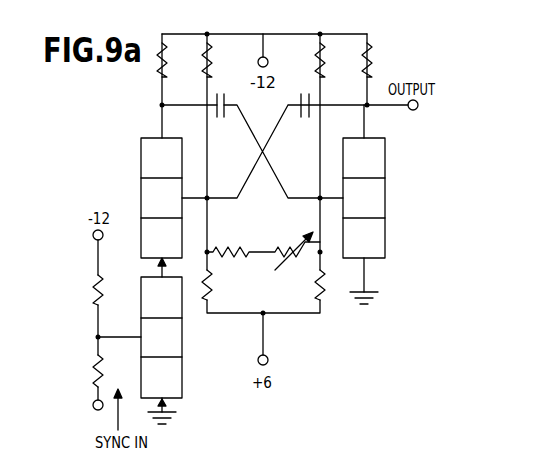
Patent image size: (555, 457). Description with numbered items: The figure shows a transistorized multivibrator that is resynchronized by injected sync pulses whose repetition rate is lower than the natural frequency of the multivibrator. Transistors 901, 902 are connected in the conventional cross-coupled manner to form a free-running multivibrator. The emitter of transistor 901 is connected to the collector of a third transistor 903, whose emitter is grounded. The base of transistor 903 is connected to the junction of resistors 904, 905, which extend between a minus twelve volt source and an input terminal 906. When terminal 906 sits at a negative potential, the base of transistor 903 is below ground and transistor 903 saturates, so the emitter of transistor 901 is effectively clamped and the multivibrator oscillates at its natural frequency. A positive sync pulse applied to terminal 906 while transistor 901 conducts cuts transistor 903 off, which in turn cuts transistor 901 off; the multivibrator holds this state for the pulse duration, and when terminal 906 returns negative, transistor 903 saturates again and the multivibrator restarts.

The transistor 901 is at (140, 167).
The transistor 902 is at (385, 173).
The third transistor 903 is at (182, 365).
The resistor 904 is at (93, 363).
The resistor 905 is at (94, 283).
The input terminal 906 is at (95, 413).